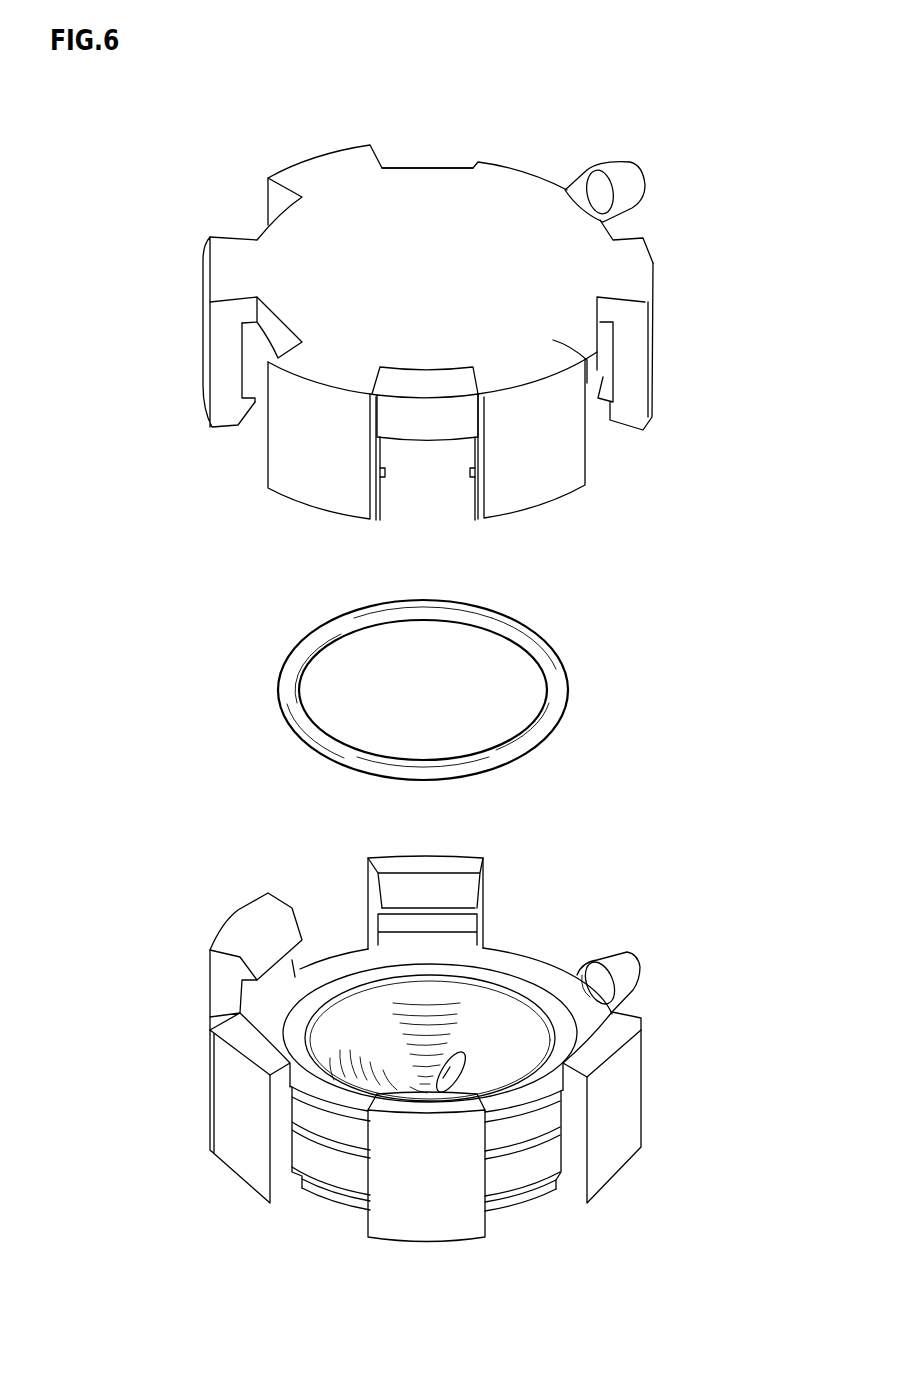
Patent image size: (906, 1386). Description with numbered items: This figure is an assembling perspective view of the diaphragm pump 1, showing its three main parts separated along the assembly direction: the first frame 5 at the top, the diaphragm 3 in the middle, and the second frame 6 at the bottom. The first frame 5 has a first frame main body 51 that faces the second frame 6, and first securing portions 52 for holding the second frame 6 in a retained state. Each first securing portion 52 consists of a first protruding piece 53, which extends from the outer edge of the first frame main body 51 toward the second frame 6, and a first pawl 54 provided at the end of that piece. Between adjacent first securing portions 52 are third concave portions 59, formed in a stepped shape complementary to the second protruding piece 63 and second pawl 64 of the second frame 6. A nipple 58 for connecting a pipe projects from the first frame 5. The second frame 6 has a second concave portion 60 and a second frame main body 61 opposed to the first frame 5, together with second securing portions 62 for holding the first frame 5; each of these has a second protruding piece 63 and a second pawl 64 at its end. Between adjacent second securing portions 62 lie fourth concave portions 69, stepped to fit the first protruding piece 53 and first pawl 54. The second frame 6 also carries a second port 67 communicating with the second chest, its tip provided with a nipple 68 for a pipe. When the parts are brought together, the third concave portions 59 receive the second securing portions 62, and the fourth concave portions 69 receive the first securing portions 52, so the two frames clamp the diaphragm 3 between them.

The diaphragm pump 1 is at (718, 87).
The diaphragm 3 is at (478, 680).
The first frame 5 is at (438, 316).
The first frame main body 51 is at (390, 217).
The first securing portions 52 is at (205, 383).
The first protruding piece 53 is at (630, 366).
The first pawl 54 is at (607, 417).
The nipple 58 is at (632, 183).
The third concave portions 59 is at (248, 362).
The second frame 6 is at (425, 1058).
The second concave portion 60 is at (488, 1030).
The second frame main body 61 is at (347, 963).
The second securing portions 62 is at (242, 1138).
The second protruding piece 63 is at (225, 981).
The second pawl 64 is at (263, 947).
The second port 67 is at (442, 1088).
The nipple 68 is at (625, 972).
The fourth concave portions 69 is at (324, 1203).